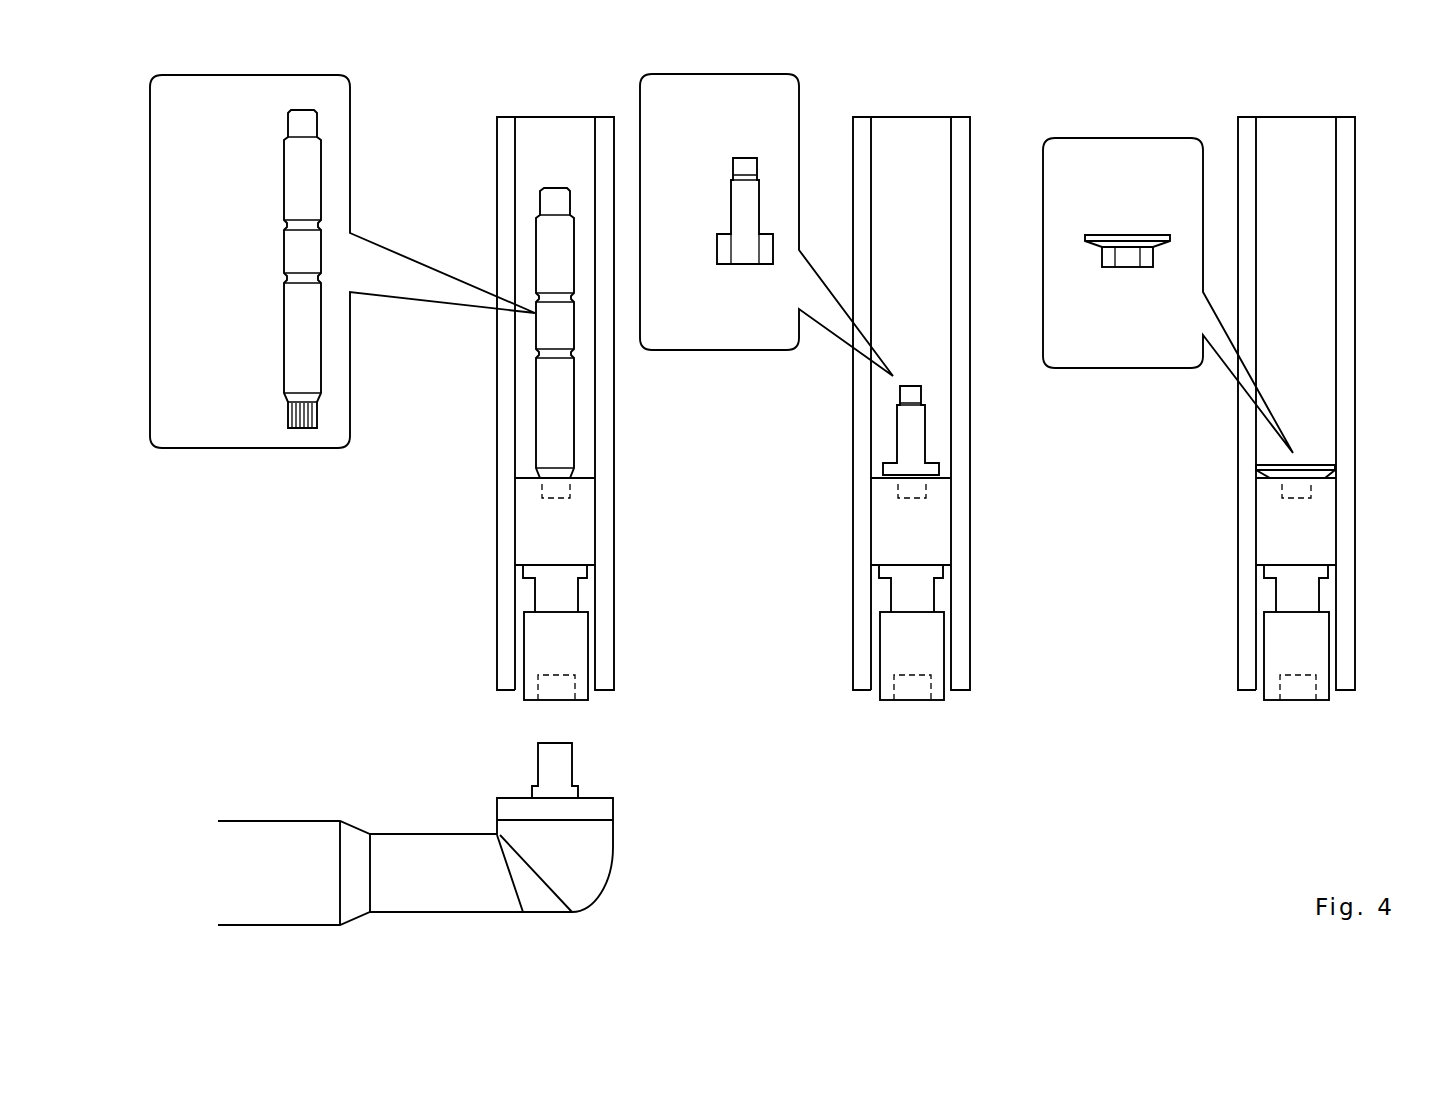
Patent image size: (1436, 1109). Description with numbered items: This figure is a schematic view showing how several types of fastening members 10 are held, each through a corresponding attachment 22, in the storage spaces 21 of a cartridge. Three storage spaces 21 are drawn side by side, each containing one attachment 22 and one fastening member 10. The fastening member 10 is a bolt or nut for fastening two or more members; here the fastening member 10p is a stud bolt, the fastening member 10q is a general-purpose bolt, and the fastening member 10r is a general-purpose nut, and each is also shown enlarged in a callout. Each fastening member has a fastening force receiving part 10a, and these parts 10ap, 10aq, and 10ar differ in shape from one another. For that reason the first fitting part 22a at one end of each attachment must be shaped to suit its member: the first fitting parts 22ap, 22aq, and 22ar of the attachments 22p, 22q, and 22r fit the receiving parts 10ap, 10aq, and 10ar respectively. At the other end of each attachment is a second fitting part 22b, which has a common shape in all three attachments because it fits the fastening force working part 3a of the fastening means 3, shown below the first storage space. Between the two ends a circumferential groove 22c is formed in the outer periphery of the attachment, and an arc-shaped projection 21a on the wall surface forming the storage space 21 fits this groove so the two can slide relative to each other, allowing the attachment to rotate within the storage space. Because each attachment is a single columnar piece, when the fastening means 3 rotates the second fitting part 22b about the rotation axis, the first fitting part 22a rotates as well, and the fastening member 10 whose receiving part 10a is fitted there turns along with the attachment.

The fastening means 3 is at (437, 834).
The fastening force working part 3a is at (575, 760).
The fastening member 10 is at (247, 264).
The fastening force receiving part 10a is at (242, 418).
The stud bolt 10p is at (362, 276).
The fastening force receiving part of stud bolt 10ap is at (242, 404).
The general-purpose bolt 10q is at (789, 274).
The fastening force receiving part of general-purpose bolt 10aq is at (742, 265).
The general-purpose nut 10r is at (1189, 308).
The fastening force receiving part of general-purpose nut 10ar is at (1145, 268).
The storage space 21 is at (533, 158).
The arc-shaped projection 21a is at (587, 595).
The attachment 22 is at (509, 636).
The first fitting part 22a is at (542, 491).
The first fitting part of attachment 22p 22ap is at (465, 521).
The first fitting part of attachment 22q 22aq is at (821, 521).
The first fitting part of attachment 22r 22ar is at (1208, 521).
The second fitting part 22b is at (523, 720).
The circumferential groove 22c is at (547, 595).
The attachment for stud bolt 22p is at (509, 636).
The attachment for general-purpose bolt 22q is at (865, 635).
The attachment for general-purpose nut 22r is at (1251, 640).